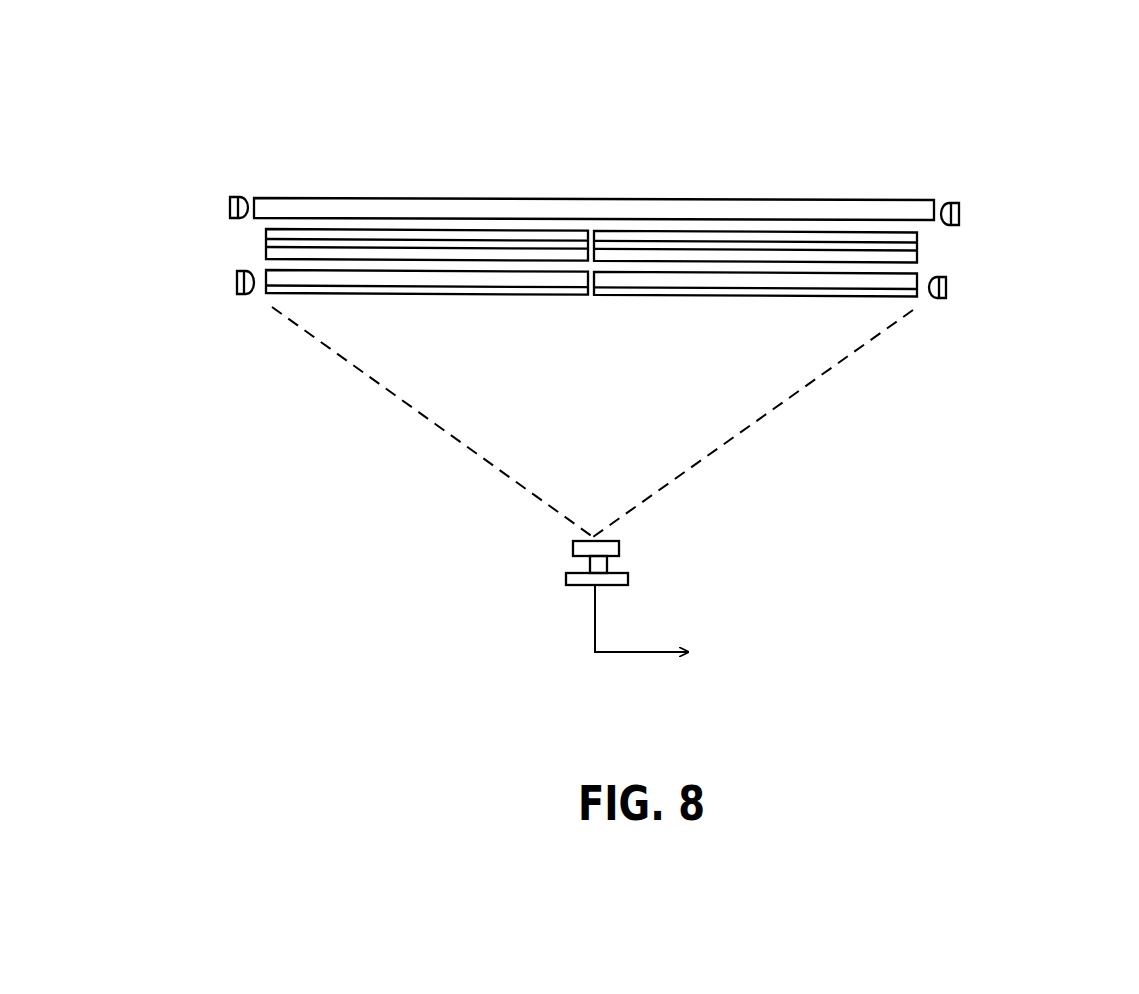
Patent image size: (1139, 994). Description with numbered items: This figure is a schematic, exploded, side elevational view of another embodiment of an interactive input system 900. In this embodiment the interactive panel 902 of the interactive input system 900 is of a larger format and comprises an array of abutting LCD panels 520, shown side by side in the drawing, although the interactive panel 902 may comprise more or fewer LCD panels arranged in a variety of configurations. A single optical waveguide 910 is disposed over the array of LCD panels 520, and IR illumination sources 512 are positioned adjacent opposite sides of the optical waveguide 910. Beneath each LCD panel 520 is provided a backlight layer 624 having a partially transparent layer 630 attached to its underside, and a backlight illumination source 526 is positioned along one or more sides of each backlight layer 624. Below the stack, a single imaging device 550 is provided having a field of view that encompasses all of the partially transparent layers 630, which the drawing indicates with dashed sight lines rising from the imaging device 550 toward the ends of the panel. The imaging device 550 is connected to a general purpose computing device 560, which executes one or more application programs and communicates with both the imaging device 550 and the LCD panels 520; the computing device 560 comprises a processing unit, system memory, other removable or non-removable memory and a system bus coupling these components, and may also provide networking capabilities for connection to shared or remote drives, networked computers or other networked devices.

The interactive input system 900 is at (247, 143).
The optical waveguide 910 is at (542, 200).
The IR illumination source 512 is at (228, 203).
The LCD panel 520 is at (255, 230).
The backlight illumination source 526 is at (236, 276).
The backlight layer 624 is at (333, 277).
The partially transparent layer 630 is at (453, 293).
The interactive panel 902 is at (1030, 202).
The imaging device 550 is at (573, 548).
The general purpose computing device 560 is at (724, 636).